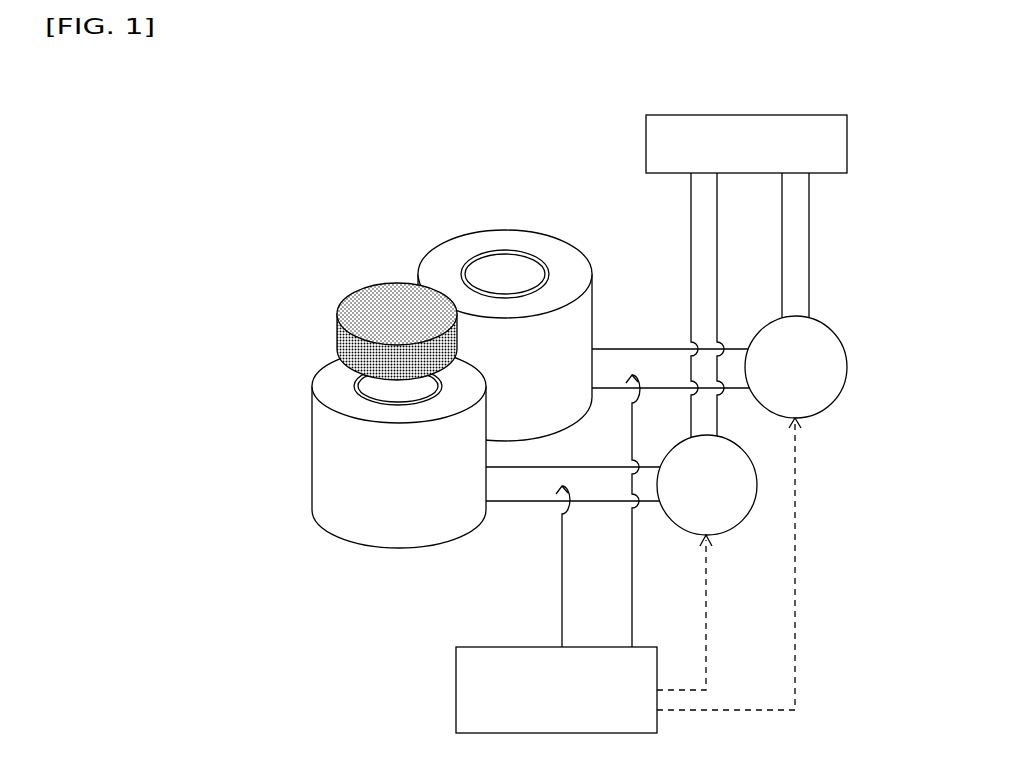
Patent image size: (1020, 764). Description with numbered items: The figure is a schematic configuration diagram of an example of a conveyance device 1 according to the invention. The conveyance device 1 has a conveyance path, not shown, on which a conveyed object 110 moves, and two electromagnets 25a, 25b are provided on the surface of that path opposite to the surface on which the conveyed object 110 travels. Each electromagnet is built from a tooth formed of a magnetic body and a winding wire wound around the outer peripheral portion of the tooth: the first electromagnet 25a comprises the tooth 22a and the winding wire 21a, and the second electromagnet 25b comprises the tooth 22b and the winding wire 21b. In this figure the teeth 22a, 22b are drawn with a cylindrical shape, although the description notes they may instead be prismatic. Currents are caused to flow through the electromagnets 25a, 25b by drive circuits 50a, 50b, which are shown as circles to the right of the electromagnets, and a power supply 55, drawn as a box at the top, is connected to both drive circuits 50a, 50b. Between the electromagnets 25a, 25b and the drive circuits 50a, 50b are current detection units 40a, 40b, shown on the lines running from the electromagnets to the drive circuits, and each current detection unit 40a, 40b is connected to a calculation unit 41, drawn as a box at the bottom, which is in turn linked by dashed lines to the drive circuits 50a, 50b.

The conveyance device 1 is at (222, 236).
The conveyed object 110 is at (345, 305).
The electromagnet 25a is at (317, 445).
The winding wire 21a is at (325, 378).
The tooth 22a is at (397, 386).
The electromagnet 25b is at (504, 277).
The winding wire 21b is at (476, 246).
The tooth 22b is at (505, 235).
The current detection unit 40a is at (518, 504).
The current detection unit 40b is at (632, 374).
The drive circuit 50a is at (727, 533).
The drive circuit 50b is at (828, 408).
The power supply 55 is at (785, 114).
The calculation unit 41 is at (456, 686).